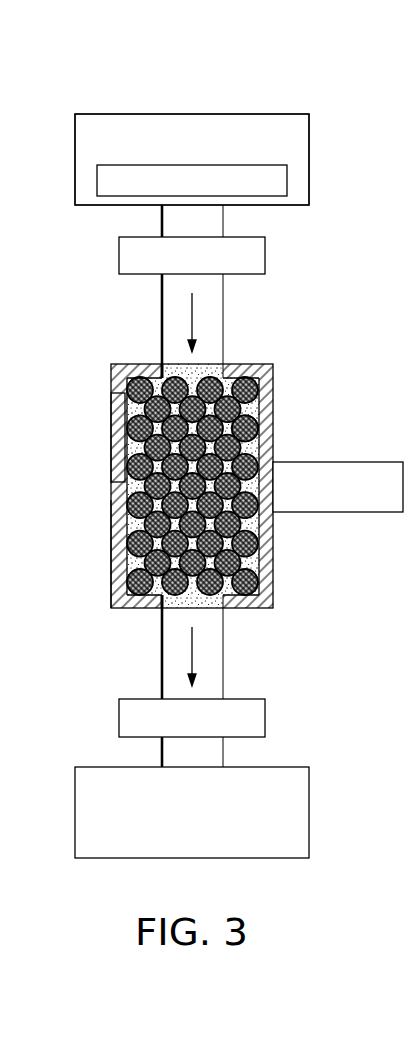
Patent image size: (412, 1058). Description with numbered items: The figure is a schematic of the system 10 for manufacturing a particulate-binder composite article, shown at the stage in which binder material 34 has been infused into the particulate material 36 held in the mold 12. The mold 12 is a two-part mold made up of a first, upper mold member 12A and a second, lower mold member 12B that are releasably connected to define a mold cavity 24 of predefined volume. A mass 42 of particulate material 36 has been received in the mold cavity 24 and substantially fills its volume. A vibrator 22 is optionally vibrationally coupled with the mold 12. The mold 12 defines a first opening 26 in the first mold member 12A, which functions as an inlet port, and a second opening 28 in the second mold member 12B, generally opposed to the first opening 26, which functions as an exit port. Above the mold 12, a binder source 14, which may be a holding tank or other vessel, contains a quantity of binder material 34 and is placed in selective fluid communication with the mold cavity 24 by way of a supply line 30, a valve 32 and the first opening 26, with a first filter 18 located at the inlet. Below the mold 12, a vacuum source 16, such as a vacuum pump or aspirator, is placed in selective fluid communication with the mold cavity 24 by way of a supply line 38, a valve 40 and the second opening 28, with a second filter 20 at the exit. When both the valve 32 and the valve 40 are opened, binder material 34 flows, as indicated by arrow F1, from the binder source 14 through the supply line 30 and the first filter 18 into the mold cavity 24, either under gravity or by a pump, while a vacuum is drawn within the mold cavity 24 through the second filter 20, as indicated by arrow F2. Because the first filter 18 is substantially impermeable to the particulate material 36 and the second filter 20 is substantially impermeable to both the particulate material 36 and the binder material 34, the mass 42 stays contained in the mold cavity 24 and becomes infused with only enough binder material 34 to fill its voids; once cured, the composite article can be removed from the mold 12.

The system for manufacturing a particulate-binder composite article 10 is at (330, 105).
The mold 12 is at (190, 485).
The first mold member 12A is at (111, 410).
The second mold member 12B is at (111, 567).
The binder source 14 is at (309, 143).
The vacuum source 16 is at (309, 822).
The first filter 18 is at (202, 372).
The second filter 20 is at (205, 603).
The vibrator 22 is at (348, 512).
The mold cavity 24 is at (153, 408).
The first opening 26 is at (170, 372).
The second opening 28 is at (168, 603).
The supply line 30 is at (162, 315).
The valve 32 is at (265, 257).
The binder material 34 is at (287, 181).
The particulate material 36 is at (150, 440).
The supply line 38 is at (223, 682).
The valve 40 is at (265, 718).
The mass of particulate material 42 is at (256, 430).
The arrow indicating binder flow F1 is at (193, 317).
The arrow indicating vacuum draw F2 is at (192, 655).